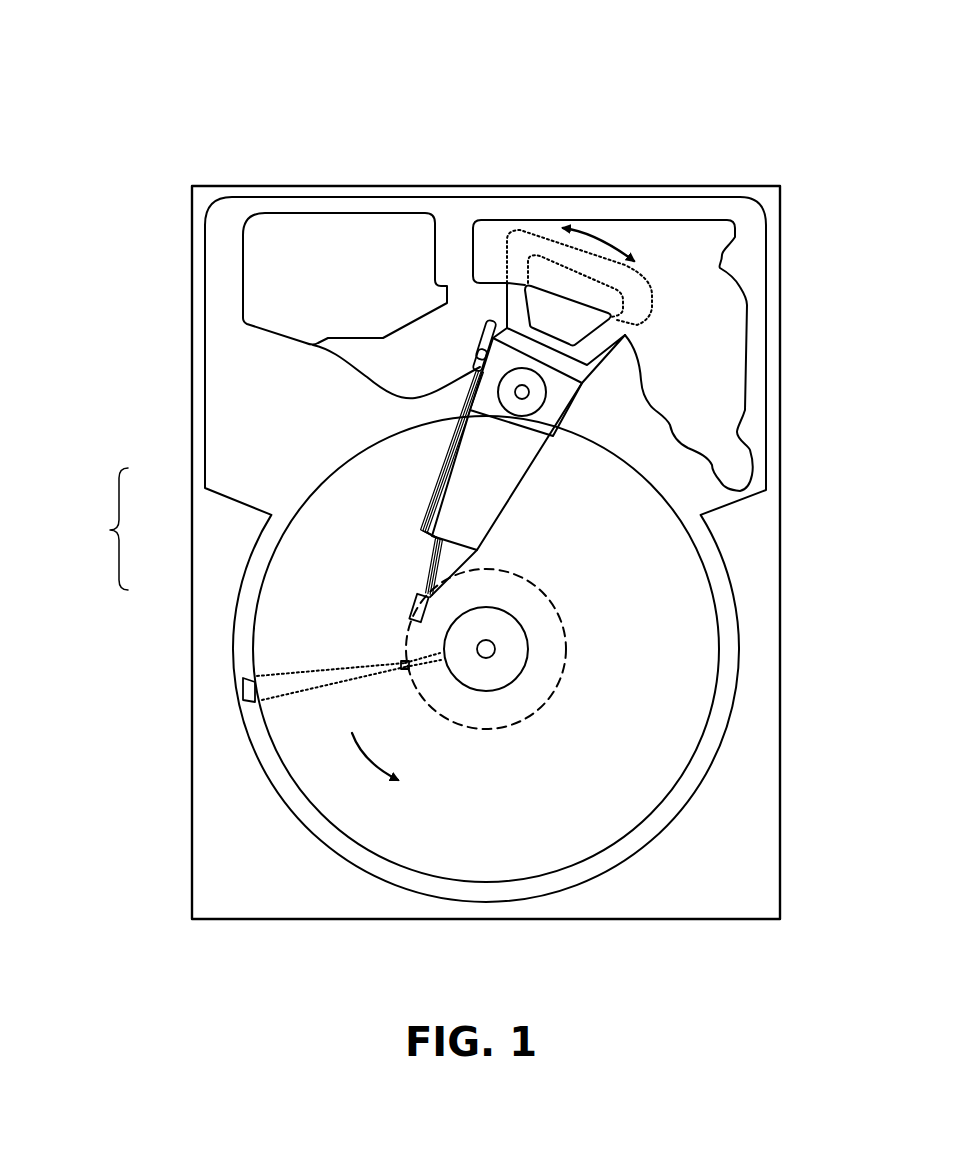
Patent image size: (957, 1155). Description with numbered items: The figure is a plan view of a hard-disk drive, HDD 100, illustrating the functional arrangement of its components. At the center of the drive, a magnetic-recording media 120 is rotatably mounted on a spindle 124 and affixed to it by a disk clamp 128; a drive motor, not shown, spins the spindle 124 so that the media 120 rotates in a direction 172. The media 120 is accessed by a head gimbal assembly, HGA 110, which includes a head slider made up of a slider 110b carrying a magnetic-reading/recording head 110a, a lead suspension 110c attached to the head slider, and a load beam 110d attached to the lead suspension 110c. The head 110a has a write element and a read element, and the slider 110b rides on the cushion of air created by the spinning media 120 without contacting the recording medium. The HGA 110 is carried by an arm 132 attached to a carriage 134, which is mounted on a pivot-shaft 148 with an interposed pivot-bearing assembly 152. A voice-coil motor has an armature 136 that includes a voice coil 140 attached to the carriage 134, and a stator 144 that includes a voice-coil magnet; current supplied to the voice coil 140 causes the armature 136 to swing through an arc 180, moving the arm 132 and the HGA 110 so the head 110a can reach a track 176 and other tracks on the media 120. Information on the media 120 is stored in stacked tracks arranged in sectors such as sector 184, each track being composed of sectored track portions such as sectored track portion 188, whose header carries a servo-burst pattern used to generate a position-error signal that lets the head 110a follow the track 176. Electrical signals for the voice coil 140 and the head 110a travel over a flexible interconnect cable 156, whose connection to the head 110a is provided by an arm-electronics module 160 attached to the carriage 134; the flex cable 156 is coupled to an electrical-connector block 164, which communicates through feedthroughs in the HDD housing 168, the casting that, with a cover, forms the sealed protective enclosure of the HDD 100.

The HDD 100 is at (127, 76).
The head gimbal assembly 110 is at (275, 496).
The magnetic-reading/recording head 110a is at (405, 617).
The slider 110b is at (428, 580).
The lead suspension 110c is at (430, 557).
The load beam 110d is at (425, 531).
The magnetic-recording media 120 is at (650, 603).
The spindle 124 is at (495, 647).
The disk clamp 128 is at (510, 663).
The arm 132 is at (478, 497).
The carriage 134 is at (538, 423).
The armature 136 is at (505, 325).
The voice coil 140 is at (520, 297).
The stator 144 is at (713, 303).
The pivot-shaft 148 is at (529, 392).
The pivot-bearing assembly 152 is at (533, 403).
The flexible interconnect cable 156 is at (353, 369).
The arm-electronics module 160 is at (475, 360).
The electrical-connector block 164 is at (265, 278).
The HDD housing 168 is at (765, 196).
The direction 172 is at (405, 755).
The track 176 is at (553, 610).
The arc 180 is at (590, 297).
The sector 184 is at (243, 684).
The sectored track portion 188 is at (402, 665).